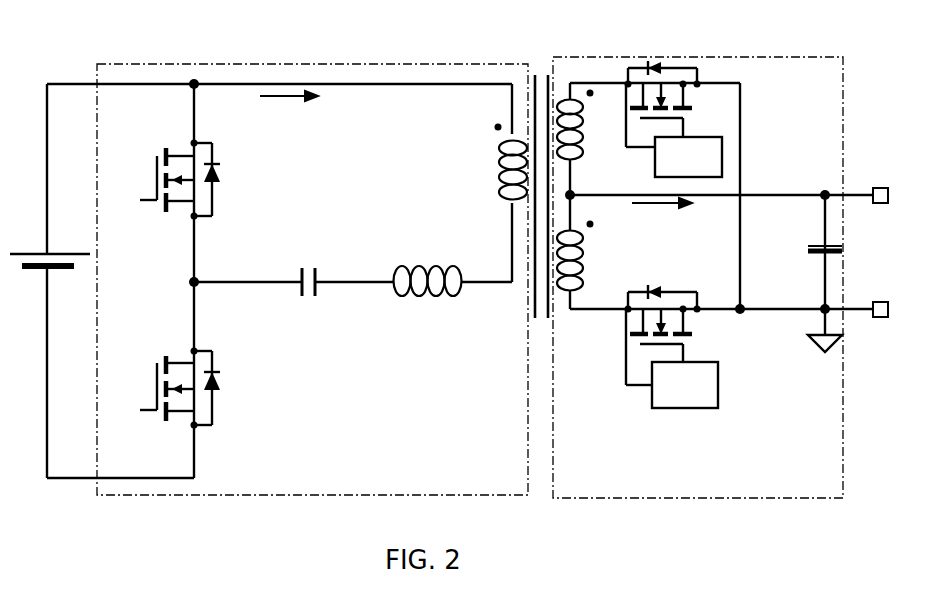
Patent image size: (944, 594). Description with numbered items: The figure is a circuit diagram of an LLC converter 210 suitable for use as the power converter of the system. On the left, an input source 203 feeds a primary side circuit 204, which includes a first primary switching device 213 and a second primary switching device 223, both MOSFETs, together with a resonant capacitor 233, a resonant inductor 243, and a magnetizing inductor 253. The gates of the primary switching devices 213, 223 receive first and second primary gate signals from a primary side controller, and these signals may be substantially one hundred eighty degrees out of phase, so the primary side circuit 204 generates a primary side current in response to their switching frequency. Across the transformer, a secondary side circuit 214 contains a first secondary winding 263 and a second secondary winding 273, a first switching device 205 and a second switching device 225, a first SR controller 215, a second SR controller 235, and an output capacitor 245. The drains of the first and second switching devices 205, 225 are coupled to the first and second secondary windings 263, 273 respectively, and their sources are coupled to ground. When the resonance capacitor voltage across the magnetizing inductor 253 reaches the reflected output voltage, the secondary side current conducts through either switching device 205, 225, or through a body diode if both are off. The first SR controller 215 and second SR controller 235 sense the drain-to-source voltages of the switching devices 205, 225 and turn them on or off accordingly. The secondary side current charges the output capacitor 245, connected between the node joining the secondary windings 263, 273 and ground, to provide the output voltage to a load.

The LLC converter 210 is at (96, 36).
The input voltage source / battery 203 is at (44, 254).
The primary side circuit 204 is at (204, 64).
The first primary switching device 213 is at (166, 148).
The second primary switching device 223 is at (160, 366).
The resonant capacitor 233 is at (318, 272).
The resonant inductor 243 is at (402, 296).
The magnetizing inductor 253 is at (499, 193).
The secondary side circuit 214 is at (708, 57).
The first secondary winding 263 is at (584, 155).
The second secondary winding 273 is at (584, 238).
The first switching device 205 is at (688, 112).
The second switching device 225 is at (692, 335).
The first SR controller 215 is at (656, 157).
The second SR controller 235 is at (702, 409).
The output capacitor 245 is at (809, 250).